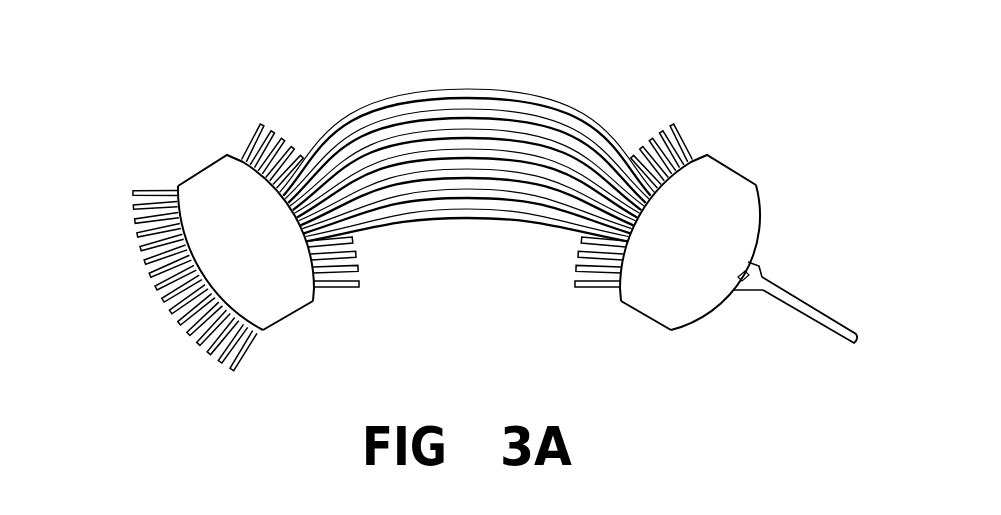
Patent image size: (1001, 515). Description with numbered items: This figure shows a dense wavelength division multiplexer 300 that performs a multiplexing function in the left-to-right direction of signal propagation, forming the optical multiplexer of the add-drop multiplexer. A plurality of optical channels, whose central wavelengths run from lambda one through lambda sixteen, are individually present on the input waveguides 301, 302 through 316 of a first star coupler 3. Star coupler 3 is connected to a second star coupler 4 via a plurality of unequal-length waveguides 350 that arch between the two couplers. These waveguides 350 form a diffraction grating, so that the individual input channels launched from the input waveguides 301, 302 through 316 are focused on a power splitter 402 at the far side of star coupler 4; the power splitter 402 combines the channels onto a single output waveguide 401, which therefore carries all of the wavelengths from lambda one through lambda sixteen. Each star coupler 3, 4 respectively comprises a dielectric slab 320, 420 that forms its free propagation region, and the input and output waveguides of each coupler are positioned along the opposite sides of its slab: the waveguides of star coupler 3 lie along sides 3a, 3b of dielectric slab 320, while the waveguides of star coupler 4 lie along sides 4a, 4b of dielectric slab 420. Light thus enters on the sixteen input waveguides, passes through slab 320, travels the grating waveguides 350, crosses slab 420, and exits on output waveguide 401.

The arrayed waveguide grating multiplexer 300 is at (200, 55).
The star coupler 3 is at (203, 166).
The dielectric slab 320 is at (262, 246).
The side of dielectric slab 3a is at (262, 332).
The side of dielectric slab 3b is at (316, 296).
The input waveguide 301 is at (131, 192).
The input waveguide 302 is at (131, 205).
The input waveguide 316 is at (104, 228).
The unequal-length waveguides 350 is at (545, 233).
The star coupler 4 is at (731, 166).
The dielectric slab 420 is at (705, 246).
The side of dielectric slab 4a is at (619, 297).
The side of dielectric slab 4b is at (673, 330).
The output waveguide 401 is at (883, 357).
The power splitter 402 is at (761, 270).